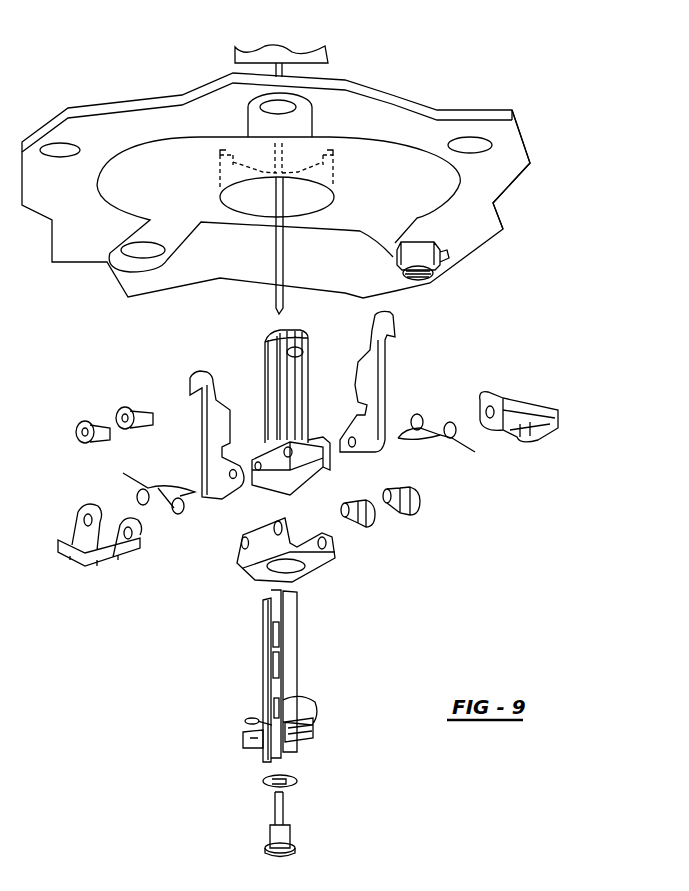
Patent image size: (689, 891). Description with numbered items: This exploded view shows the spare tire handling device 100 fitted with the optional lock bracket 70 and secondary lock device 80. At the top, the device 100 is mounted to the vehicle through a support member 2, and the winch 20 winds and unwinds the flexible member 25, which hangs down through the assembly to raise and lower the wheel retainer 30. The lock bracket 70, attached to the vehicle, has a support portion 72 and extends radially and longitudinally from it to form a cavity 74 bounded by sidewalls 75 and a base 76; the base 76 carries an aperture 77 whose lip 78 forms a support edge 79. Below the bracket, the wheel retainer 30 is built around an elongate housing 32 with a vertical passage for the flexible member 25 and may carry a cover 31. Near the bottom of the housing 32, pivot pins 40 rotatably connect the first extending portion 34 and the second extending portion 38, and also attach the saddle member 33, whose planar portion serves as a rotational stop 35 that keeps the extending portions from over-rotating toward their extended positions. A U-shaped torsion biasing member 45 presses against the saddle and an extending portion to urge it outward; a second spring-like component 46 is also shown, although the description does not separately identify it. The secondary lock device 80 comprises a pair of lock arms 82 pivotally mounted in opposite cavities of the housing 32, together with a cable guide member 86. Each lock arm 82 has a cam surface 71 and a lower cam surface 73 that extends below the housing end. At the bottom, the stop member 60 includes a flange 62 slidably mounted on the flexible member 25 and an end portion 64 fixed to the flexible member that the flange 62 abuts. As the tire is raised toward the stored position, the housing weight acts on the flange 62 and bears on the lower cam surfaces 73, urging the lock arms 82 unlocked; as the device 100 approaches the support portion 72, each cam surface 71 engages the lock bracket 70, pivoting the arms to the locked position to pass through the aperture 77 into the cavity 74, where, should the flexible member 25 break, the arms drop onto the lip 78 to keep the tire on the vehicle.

The spare tire handling device 100 is at (530, 118).
The lock bracket 70 is at (407, 180).
The support member 2 is at (500, 216).
The base 76 is at (180, 190).
The winch 20 is at (344, 55).
The cavity 74 is at (306, 201).
The sidewalls 75 is at (276, 163).
The aperture 77 is at (241, 142).
The support edge 79 is at (222, 152).
The lip 78 is at (337, 148).
The flexible member 25 is at (286, 253).
The support portion 72 is at (423, 207).
The wheel retainer 30 is at (481, 331).
The cover 31 is at (312, 343).
The secondary lock device 80 is at (235, 344).
The lock arms 82 is at (193, 415).
The cam surface 71 is at (217, 398).
The lower cam surface 73 is at (222, 447).
The pivot pin 40 is at (78, 432).
The biasing member 45 is at (150, 482).
The spring clip 46 is at (420, 415).
The second extending portion 38 is at (97, 563).
The first extending portion 34 is at (535, 433).
The saddle member 33 is at (313, 570).
The rotational stop 35 is at (253, 580).
The housing 32 is at (293, 647).
The cable guide member 86 is at (273, 672).
The flange 62 is at (300, 778).
The stop member 60 is at (308, 830).
The end portion 64 is at (277, 850).